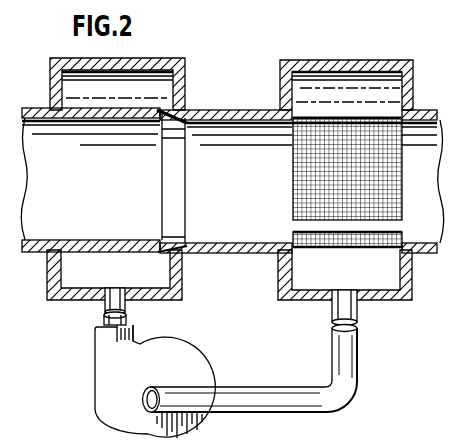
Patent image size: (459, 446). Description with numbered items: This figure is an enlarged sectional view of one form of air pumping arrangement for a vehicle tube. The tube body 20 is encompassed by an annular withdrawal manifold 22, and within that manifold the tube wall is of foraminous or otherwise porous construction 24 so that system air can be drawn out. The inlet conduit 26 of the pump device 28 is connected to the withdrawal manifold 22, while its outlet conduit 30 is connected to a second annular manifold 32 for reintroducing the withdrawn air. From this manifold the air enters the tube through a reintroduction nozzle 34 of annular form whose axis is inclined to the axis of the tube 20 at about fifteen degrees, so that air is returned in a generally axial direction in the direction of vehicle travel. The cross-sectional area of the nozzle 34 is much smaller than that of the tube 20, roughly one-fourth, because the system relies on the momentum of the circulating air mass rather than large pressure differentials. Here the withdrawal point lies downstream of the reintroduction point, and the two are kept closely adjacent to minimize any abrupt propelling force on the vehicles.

The tube body 20 is at (242, 108).
The annular manifold 22 is at (383, 60).
The foraminous tube wall 24 is at (393, 118).
The inlet conduit 26 is at (357, 352).
The pump device 28 is at (207, 357).
The outlet conduit 30 is at (126, 318).
The annular manifold 32 is at (177, 273).
The reintroduction nozzle 34 is at (173, 181).